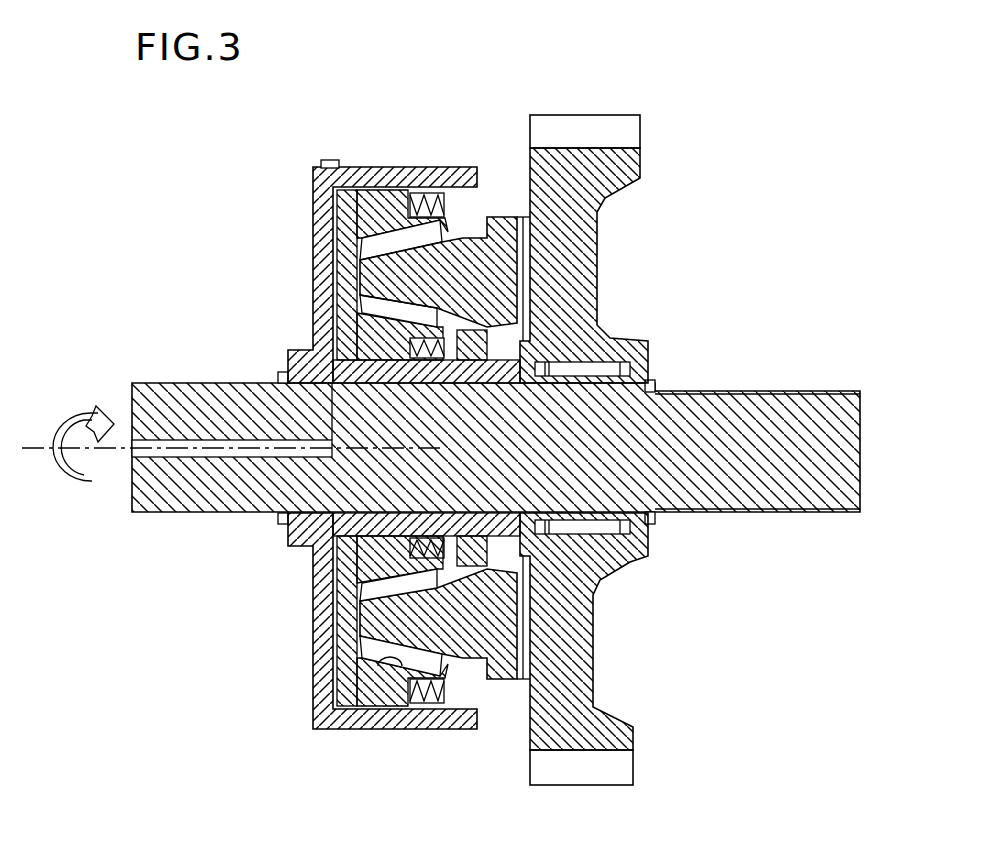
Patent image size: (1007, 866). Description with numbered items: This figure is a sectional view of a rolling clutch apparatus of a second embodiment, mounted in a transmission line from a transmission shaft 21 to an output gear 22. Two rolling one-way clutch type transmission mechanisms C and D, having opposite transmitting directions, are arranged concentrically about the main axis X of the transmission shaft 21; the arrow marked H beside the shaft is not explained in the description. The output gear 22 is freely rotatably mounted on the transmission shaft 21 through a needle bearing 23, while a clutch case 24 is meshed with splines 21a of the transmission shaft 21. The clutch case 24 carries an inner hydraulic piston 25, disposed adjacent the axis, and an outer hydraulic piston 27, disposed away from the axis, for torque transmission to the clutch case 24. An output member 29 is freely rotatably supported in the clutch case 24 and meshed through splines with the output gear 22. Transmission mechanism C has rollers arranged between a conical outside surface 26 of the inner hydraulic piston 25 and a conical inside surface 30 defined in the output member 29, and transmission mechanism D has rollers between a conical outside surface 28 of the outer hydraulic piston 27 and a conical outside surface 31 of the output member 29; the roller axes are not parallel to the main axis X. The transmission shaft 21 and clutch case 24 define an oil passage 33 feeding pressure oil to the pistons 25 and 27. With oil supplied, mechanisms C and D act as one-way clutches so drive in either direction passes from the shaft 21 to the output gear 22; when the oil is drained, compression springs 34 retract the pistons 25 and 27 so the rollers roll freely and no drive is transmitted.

The transmission shaft 21 is at (195, 382).
The splines 21a is at (724, 388).
The output gear 22 is at (640, 135).
The needle bearing 23 is at (608, 368).
The clutch case 24 is at (310, 652).
The inner hydraulic piston 25 is at (380, 570).
The conical outside surface 26 is at (385, 585).
The outer hydraulic piston 27 is at (325, 703).
The conical outside surface 28 is at (395, 668).
The output member 29 is at (470, 236).
The conical inside surface 30 is at (398, 313).
The conical outside surface 31 is at (393, 240).
The oil passage 33 is at (193, 458).
The compression springs 34 is at (433, 190).
The transmission mechanism C is at (378, 303).
The transmission mechanism D is at (383, 246).
The rotation direction H is at (83, 430).
The main axis X is at (221, 448).